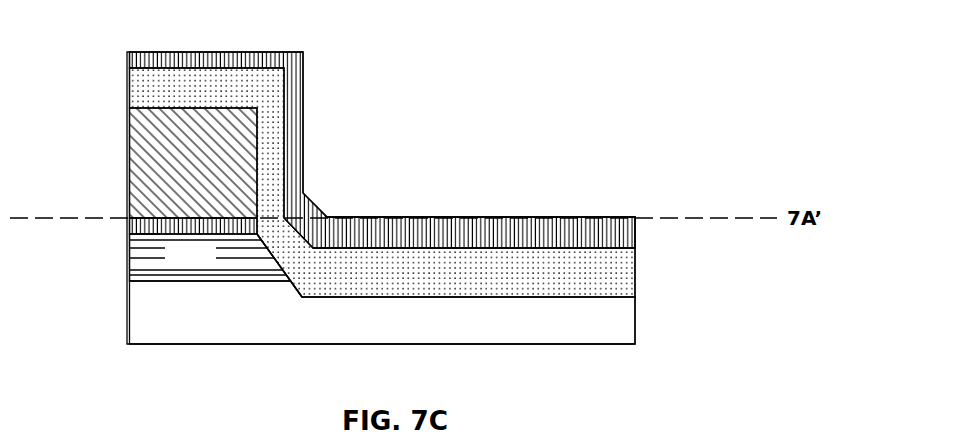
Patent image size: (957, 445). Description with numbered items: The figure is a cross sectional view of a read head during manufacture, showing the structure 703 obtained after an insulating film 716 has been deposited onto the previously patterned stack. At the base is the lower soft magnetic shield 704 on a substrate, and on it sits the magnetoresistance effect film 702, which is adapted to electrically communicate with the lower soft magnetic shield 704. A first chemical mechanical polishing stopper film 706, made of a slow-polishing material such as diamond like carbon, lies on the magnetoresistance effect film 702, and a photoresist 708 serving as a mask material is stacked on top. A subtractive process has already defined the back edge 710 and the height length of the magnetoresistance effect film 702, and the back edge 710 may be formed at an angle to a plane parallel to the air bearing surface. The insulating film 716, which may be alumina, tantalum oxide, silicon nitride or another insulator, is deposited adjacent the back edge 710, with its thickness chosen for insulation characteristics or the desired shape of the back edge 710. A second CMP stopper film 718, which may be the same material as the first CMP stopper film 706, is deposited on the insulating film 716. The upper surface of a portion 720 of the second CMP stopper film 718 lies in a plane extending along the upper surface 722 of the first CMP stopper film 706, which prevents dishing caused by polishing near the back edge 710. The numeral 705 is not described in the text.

The magnetoresistance effect film 702 is at (208, 267).
The structure 703 is at (472, 73).
The lower soft magnetic shield 704 is at (608, 329).
The region 705 is at (35, 441).
The first chemical mechanical polishing (CMP) stopper film 706 is at (128, 218).
The photoresist 708 is at (208, 157).
The back edge 710 is at (293, 264).
The insulating film 716 is at (608, 282).
The second CMP stopper film 718 is at (608, 242).
The portion of the second CMP stopper film 720 is at (507, 203).
The upper surface of the first CMP stopper film 722 is at (152, 204).